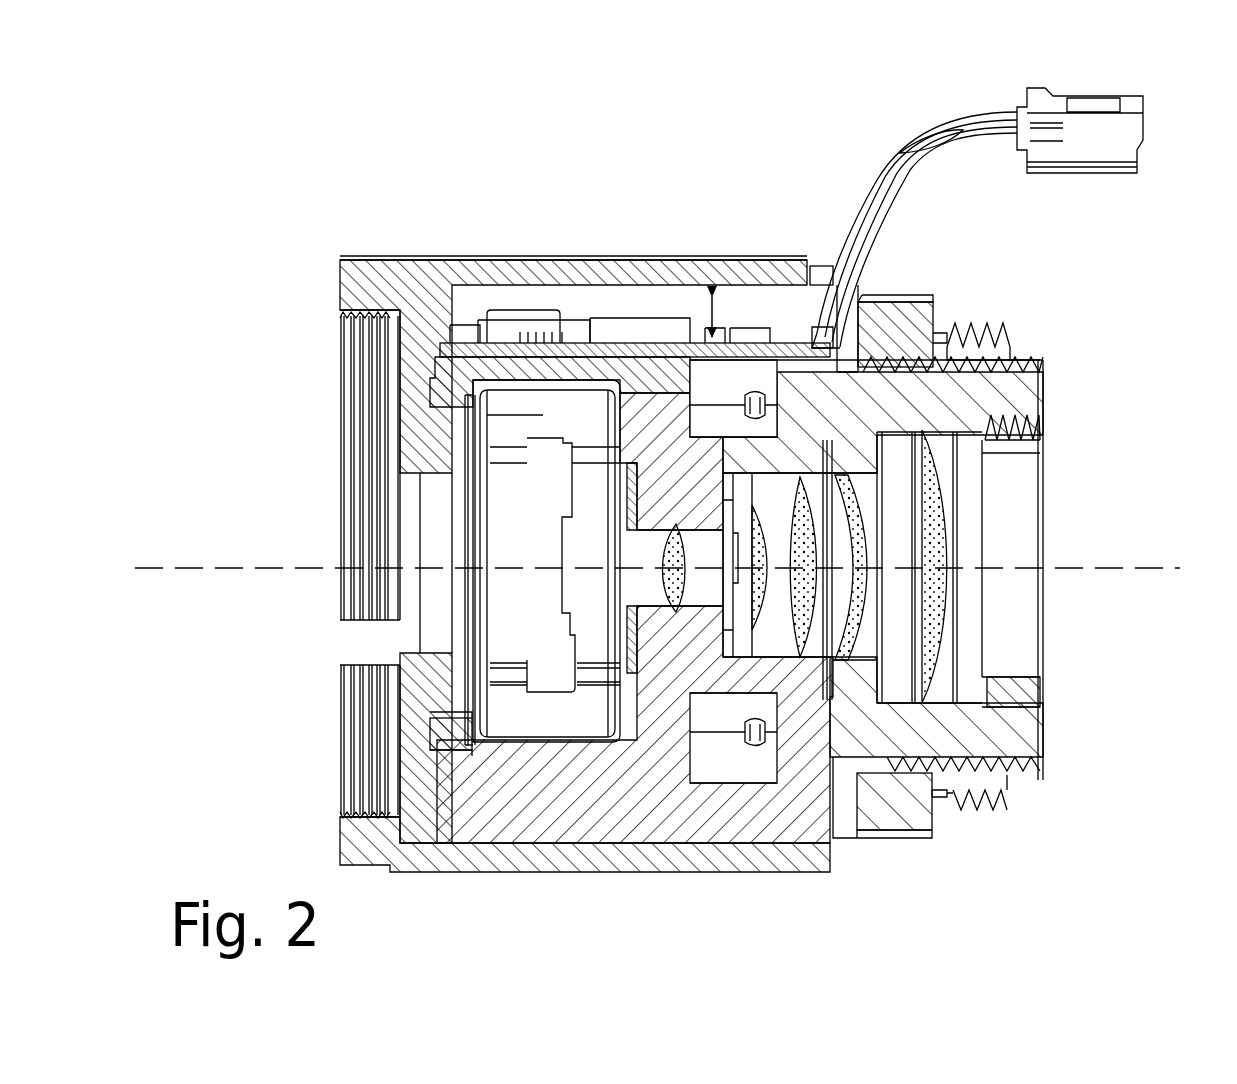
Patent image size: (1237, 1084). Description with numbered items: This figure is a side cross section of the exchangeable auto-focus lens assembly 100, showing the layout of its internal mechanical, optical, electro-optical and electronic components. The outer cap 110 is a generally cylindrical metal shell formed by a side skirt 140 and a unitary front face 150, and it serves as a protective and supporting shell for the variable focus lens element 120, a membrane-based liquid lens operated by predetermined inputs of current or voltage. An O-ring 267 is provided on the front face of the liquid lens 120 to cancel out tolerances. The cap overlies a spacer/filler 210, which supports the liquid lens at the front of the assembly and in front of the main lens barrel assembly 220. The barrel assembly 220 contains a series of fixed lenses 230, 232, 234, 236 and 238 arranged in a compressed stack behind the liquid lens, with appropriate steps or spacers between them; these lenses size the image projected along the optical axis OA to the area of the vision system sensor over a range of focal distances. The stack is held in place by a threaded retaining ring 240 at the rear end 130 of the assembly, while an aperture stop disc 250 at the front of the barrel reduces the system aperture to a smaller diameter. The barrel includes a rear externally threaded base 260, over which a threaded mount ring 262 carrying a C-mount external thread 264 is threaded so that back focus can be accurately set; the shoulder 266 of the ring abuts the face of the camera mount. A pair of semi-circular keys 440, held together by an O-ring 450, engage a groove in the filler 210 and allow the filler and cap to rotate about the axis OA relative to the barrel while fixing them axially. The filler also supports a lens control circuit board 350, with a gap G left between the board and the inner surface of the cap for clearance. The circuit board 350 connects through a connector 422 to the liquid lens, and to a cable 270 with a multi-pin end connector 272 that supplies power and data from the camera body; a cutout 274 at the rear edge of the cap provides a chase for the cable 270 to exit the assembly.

The auto-focus lens assembly 100 is at (575, 226).
The outer cap 110 is at (508, 258).
The variable focus lens element 120 is at (540, 650).
The rear end 130 is at (1015, 325).
The side skirt 140 is at (666, 314).
The front face 150 is at (378, 380).
The spacer/filler 210 is at (662, 826).
The main lens barrel assembly 220 is at (692, 768).
The fixed lens 230 is at (735, 478).
The fixed lens 232 is at (765, 495).
The fixed lens 234 is at (818, 697).
The fixed lens 236 is at (856, 636).
The fixed lens 238 is at (940, 532).
The threaded retaining ring 240 is at (1045, 684).
The aperture stop disc 250 is at (658, 716).
The rear externally threaded base 260 is at (1030, 768).
The threaded mount ring 262 is at (886, 832).
The C-mount external thread 264 is at (990, 808).
The shoulder 266 is at (940, 307).
The O-ring 267 is at (446, 738).
The cable 270 is at (937, 143).
The multi-pin end connector 272 is at (1130, 115).
The cutout 274 is at (820, 270).
The lens control circuit board 350 is at (735, 405).
The connector 422 is at (514, 307).
The keys 440 is at (738, 410).
The O-ring 450 is at (756, 744).
The gap G is at (716, 300).
The optical axis OA is at (1090, 576).